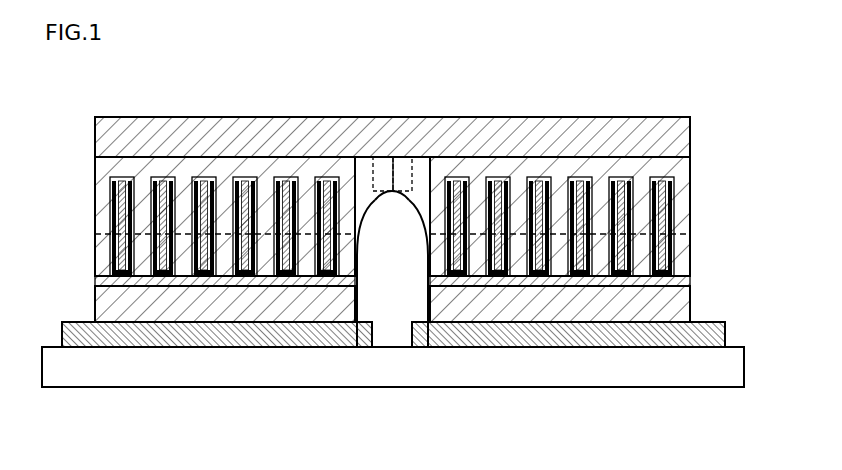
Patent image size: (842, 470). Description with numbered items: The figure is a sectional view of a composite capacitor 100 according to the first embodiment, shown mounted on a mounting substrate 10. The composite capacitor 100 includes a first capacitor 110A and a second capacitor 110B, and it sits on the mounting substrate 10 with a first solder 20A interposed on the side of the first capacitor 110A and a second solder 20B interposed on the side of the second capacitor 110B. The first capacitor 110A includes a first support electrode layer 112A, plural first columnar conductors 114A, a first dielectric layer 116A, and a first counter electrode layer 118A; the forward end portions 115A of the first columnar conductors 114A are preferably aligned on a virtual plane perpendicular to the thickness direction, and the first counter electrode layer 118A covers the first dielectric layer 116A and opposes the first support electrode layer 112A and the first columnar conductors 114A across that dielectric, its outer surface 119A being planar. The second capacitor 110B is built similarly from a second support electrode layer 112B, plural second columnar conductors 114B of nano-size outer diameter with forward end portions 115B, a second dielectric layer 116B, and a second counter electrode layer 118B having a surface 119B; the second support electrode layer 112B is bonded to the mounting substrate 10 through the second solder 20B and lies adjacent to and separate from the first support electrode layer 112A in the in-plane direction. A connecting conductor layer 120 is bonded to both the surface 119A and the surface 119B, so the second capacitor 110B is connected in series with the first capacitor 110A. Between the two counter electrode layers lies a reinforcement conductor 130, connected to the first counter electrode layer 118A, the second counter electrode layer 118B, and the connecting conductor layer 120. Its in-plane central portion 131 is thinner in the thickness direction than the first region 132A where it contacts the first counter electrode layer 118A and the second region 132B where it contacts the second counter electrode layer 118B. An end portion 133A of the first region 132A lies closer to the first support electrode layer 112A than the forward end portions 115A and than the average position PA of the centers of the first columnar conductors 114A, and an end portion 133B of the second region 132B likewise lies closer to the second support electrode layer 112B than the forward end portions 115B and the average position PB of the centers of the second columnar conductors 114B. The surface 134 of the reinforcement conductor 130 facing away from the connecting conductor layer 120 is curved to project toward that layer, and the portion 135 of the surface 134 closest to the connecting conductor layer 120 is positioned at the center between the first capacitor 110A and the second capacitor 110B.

The composite capacitor 100 is at (699, 104).
The mounting substrate 10 is at (544, 368).
The first solder 20A is at (215, 348).
The second solder 20B is at (596, 348).
The first capacitor 110A is at (92, 164).
The second capacitor 110B is at (697, 167).
The first support electrode layer 112A is at (108, 307).
The second support electrode layer 112B is at (680, 306).
The first columnar conductors 114A is at (204, 220).
The second columnar conductors 114B is at (581, 220).
The forward end portions of the first columnar conductors 115A is at (204, 178).
The forward end portions of the second columnar conductors 115B is at (582, 180).
The first dielectric layer 116A is at (100, 283).
The second dielectric layer 116B is at (688, 283).
The first counter electrode layer 118A is at (112, 197).
The second counter electrode layer 118B is at (672, 196).
The surface of the first counter electrode layer 119A is at (285, 166).
The surface of the second counter electrode layer 119B is at (530, 156).
The connecting conductor layer 120 is at (127, 138).
The reinforcement conductor 130 is at (383, 170).
The in-plane central portion 131 is at (395, 178).
The first region 132A is at (391, 189).
The second region 132B is at (414, 165).
The end portion of the first region 133A is at (357, 256).
The end portion of the second region 133B is at (428, 256).
The surface of the reinforcement conductor 134 is at (391, 193).
The portion closest to the connecting conductor layer 135 is at (393, 196).
The average position of the centers of the first columnar conductors PA is at (93, 235).
The average position of the centers of the second columnar conductors PB is at (693, 235).